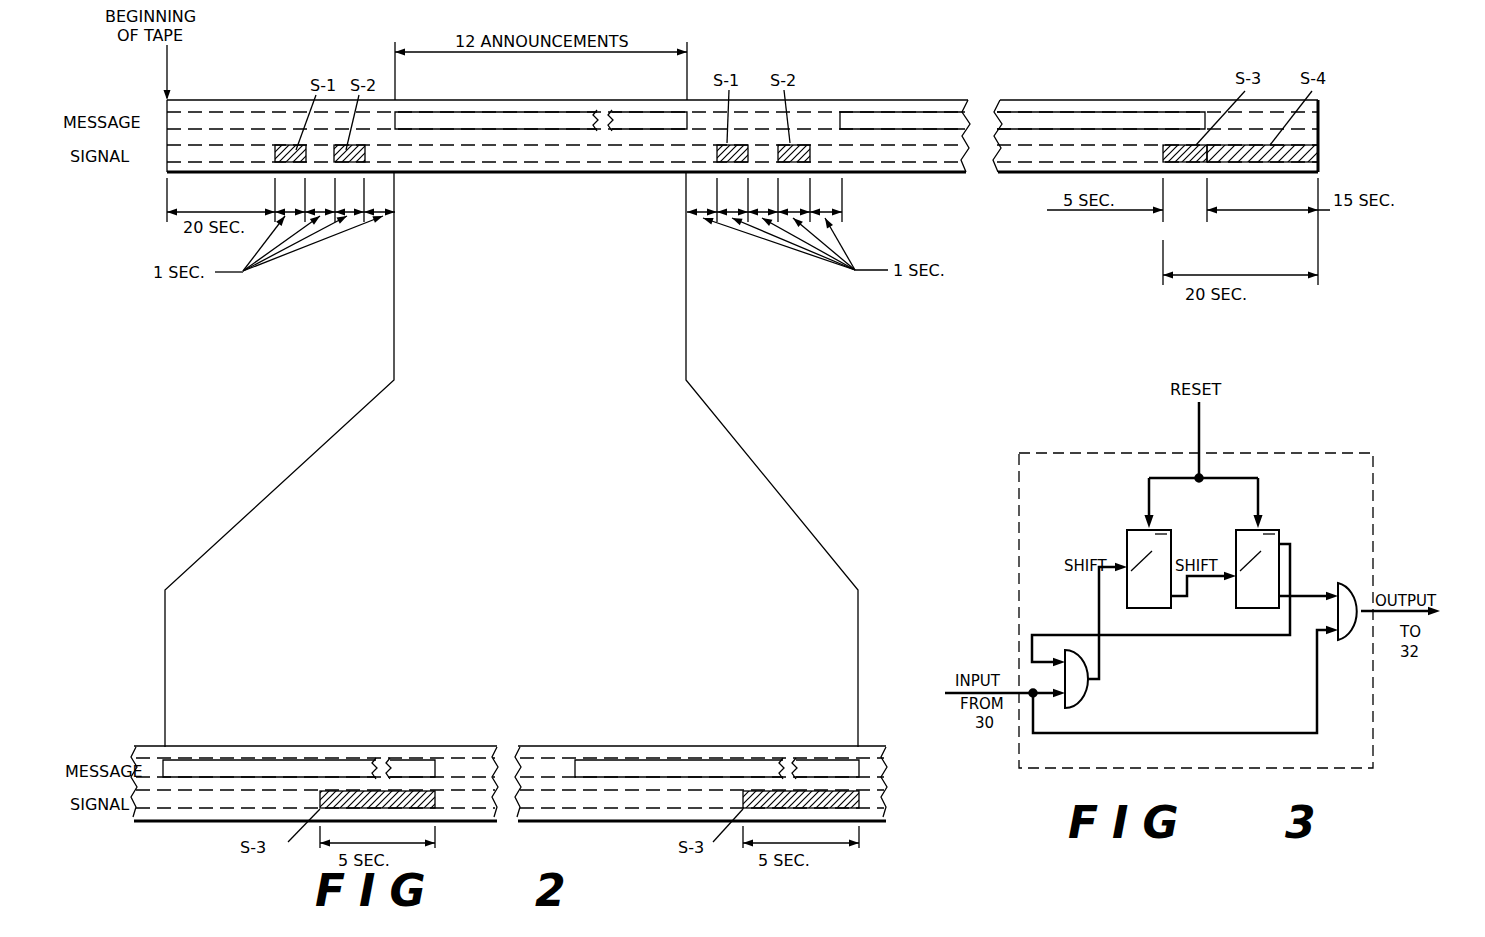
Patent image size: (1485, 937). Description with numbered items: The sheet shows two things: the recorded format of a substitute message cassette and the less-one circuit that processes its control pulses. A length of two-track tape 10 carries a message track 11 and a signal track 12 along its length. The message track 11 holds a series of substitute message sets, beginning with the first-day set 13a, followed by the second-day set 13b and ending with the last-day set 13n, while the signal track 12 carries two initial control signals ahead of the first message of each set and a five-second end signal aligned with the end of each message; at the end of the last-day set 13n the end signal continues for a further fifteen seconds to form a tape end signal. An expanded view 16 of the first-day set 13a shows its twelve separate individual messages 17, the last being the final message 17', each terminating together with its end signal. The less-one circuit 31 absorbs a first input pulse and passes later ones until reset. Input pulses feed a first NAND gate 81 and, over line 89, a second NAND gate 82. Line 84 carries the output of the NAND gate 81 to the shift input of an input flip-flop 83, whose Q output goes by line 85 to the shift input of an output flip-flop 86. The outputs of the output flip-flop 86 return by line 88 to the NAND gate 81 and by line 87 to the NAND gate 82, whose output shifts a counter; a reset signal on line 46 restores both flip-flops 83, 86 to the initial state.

In FIG. 2, the tape 10 is at (245, 94).
In FIG. 2, the message track 11 is at (275, 118).
In FIG. 2, the signal track 12 is at (192, 153).
In FIG. 2, the first-day substitute message set 13a is at (557, 120).
In FIG. 2, the second-day message set 13b is at (958, 112).
In FIG. 2, the last-day message set 13n is at (1125, 110).
In FIG. 2, the expanded view 16 is at (306, 449).
In FIG. 2, the separate individual message 17 is at (299, 747).
In FIG. 2, the final message 17' is at (717, 746).
In FIG. 3, the less-one circuit 31 is at (1090, 452).
In FIG. 3, the reset line 46 is at (1202, 436).
In FIG. 3, the first NAND gate 81 is at (1084, 697).
In FIG. 3, the second NAND gate 82 is at (1354, 643).
In FIG. 3, the input flip-flop 83 is at (1125, 531).
In FIG. 3, the line 84 is at (1099, 615).
In FIG. 3, the line 85 is at (1203, 580).
In FIG. 3, the output flip-flop 86 is at (1280, 533).
In FIG. 3, the line 87 is at (1186, 637).
In FIG. 3, the line 88 is at (1312, 595).
In FIG. 3, the line 89 is at (1243, 733).